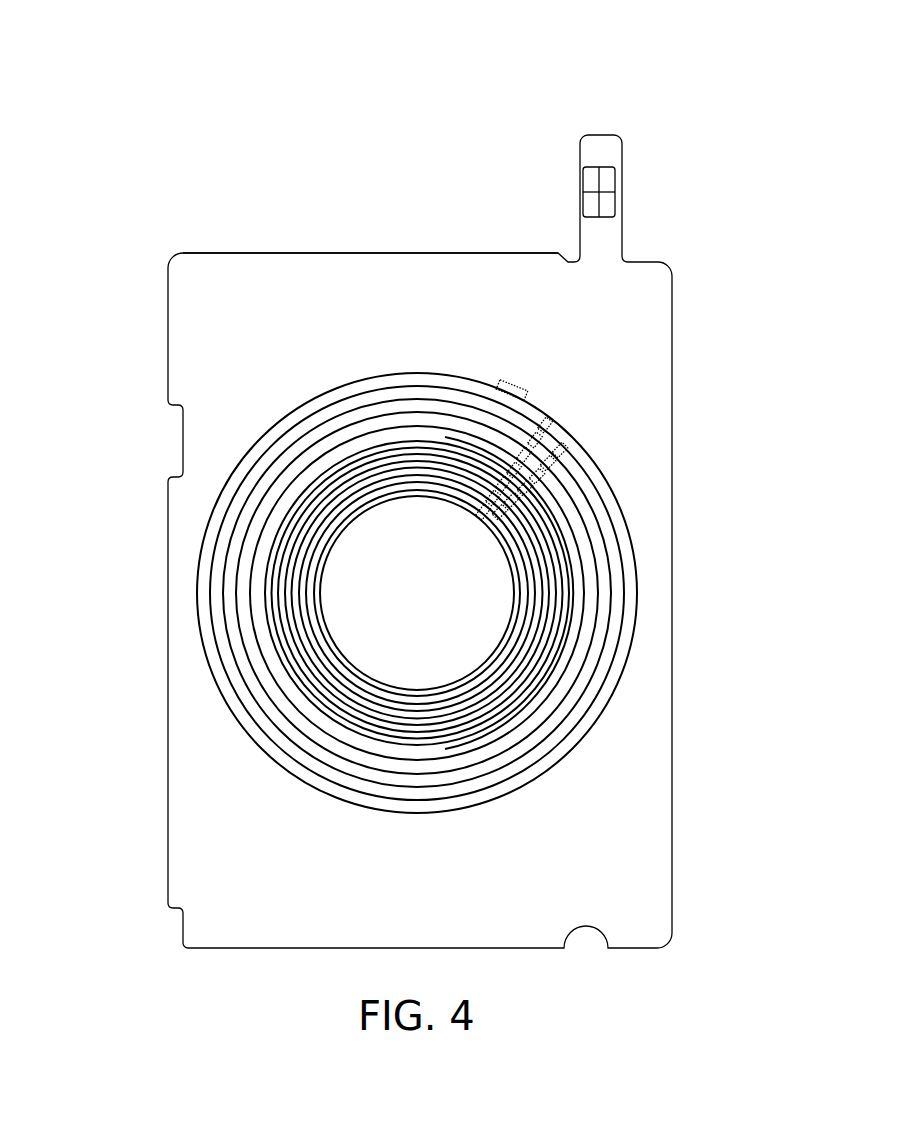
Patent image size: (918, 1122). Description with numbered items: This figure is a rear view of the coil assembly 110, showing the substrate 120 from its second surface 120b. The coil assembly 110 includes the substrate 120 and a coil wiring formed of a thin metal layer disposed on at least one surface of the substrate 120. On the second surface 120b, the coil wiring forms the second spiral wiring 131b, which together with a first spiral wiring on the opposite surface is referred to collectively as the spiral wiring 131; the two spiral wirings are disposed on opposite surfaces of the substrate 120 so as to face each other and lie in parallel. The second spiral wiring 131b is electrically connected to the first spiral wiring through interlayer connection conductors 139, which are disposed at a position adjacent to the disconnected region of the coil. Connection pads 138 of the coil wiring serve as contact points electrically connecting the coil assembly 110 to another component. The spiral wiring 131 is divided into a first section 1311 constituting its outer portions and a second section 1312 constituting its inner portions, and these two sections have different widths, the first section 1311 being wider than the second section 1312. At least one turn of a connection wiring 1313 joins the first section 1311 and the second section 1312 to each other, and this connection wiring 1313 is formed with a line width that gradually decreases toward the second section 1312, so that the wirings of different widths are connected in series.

The coil assembly 110 is at (453, 63).
The substrate 120 is at (166, 312).
The second surface 120b is at (334, 262).
The connection pads 138 is at (593, 208).
The interlayer connection conductors 139 is at (527, 507).
The spiral wiring 131 is at (530, 593).
The second spiral wiring 131b is at (795, 742).
The first section 1311 is at (630, 603).
The second section 1312 is at (565, 628).
The connection wiring 1313 is at (548, 690).